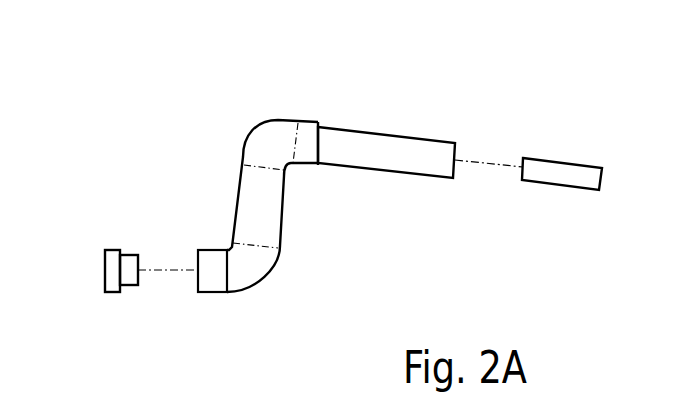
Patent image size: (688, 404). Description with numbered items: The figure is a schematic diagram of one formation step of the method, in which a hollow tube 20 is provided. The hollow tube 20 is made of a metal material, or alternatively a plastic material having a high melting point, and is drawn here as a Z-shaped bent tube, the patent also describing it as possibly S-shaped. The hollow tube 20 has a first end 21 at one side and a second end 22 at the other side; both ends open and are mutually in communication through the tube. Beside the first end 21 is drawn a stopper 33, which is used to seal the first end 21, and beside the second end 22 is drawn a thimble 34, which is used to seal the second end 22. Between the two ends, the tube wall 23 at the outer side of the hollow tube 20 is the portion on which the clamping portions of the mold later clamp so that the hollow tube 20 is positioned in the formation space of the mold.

The hollow tube 20 is at (243, 123).
The first end 21 is at (198, 263).
The second end 22 is at (458, 179).
The tube wall 23 is at (275, 121).
The stopper 33 is at (112, 270).
The thimble 34 is at (587, 161).